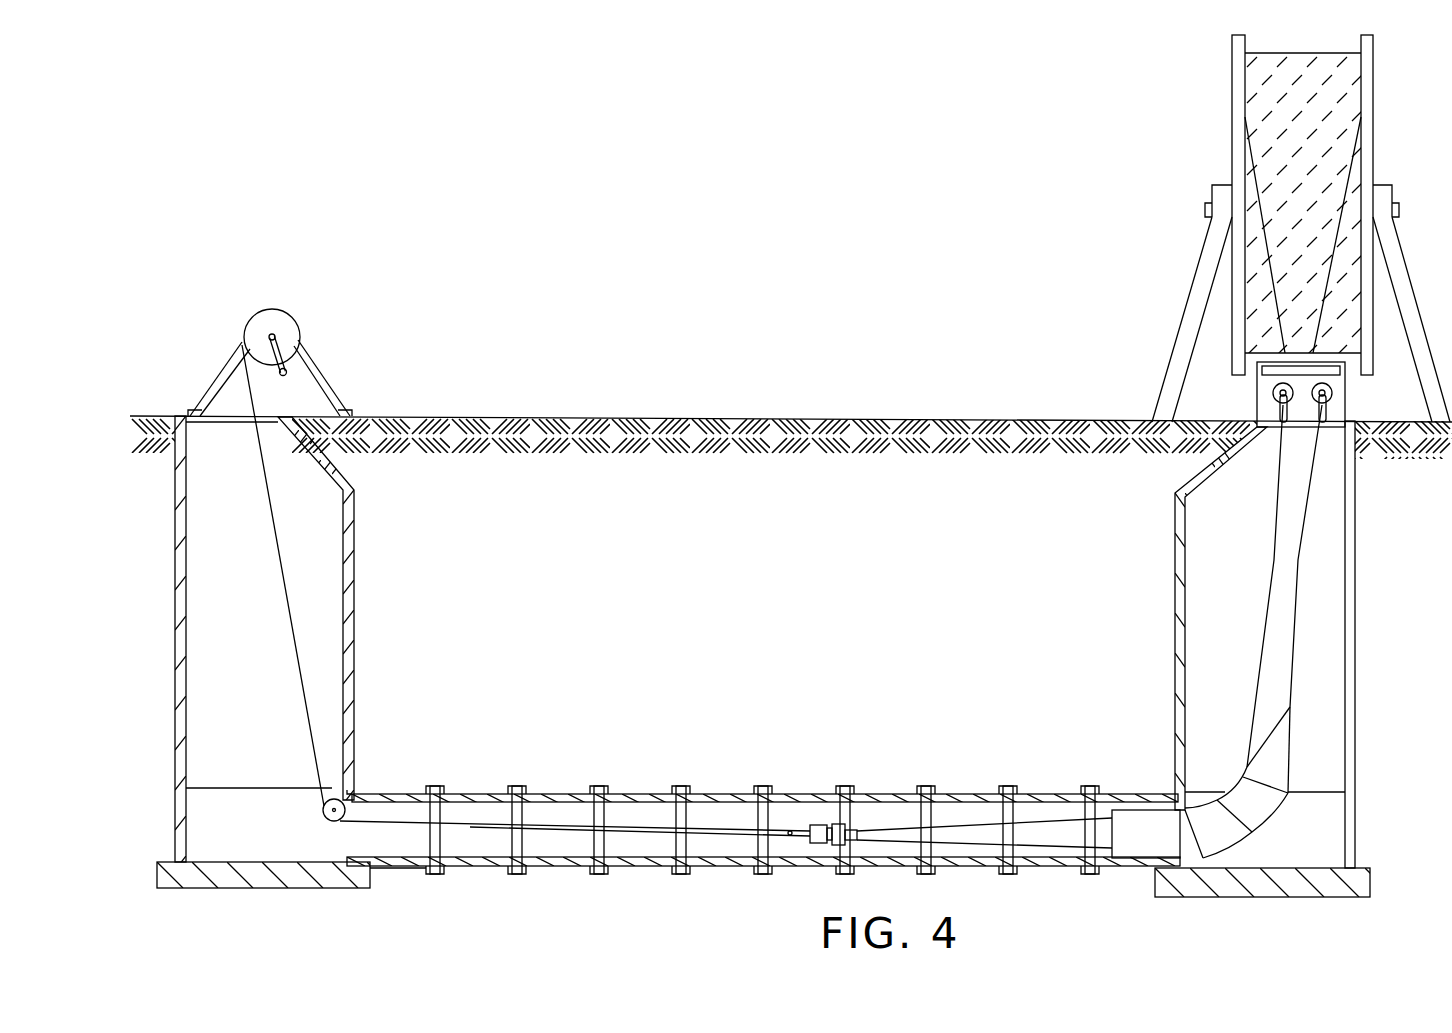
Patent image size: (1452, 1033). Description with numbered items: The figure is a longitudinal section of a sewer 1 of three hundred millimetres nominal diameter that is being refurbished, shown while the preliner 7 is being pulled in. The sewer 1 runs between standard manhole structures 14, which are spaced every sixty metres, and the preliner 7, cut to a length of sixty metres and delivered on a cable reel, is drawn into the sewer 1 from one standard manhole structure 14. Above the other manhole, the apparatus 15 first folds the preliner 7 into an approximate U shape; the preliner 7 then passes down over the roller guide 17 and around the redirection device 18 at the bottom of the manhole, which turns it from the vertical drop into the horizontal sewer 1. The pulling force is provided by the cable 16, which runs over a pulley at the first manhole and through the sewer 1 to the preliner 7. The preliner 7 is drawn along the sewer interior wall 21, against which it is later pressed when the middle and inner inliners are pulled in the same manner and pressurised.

The sewer 1 is at (711, 866).
The preliner 7 is at (1282, 618).
The standard manhole structure 14 is at (335, 573).
The apparatus 15 is at (1365, 125).
The cable 16 is at (297, 650).
The roller guide 17 is at (1337, 403).
The redirection device 18 is at (1283, 752).
The sewer interior wall 21 is at (470, 853).